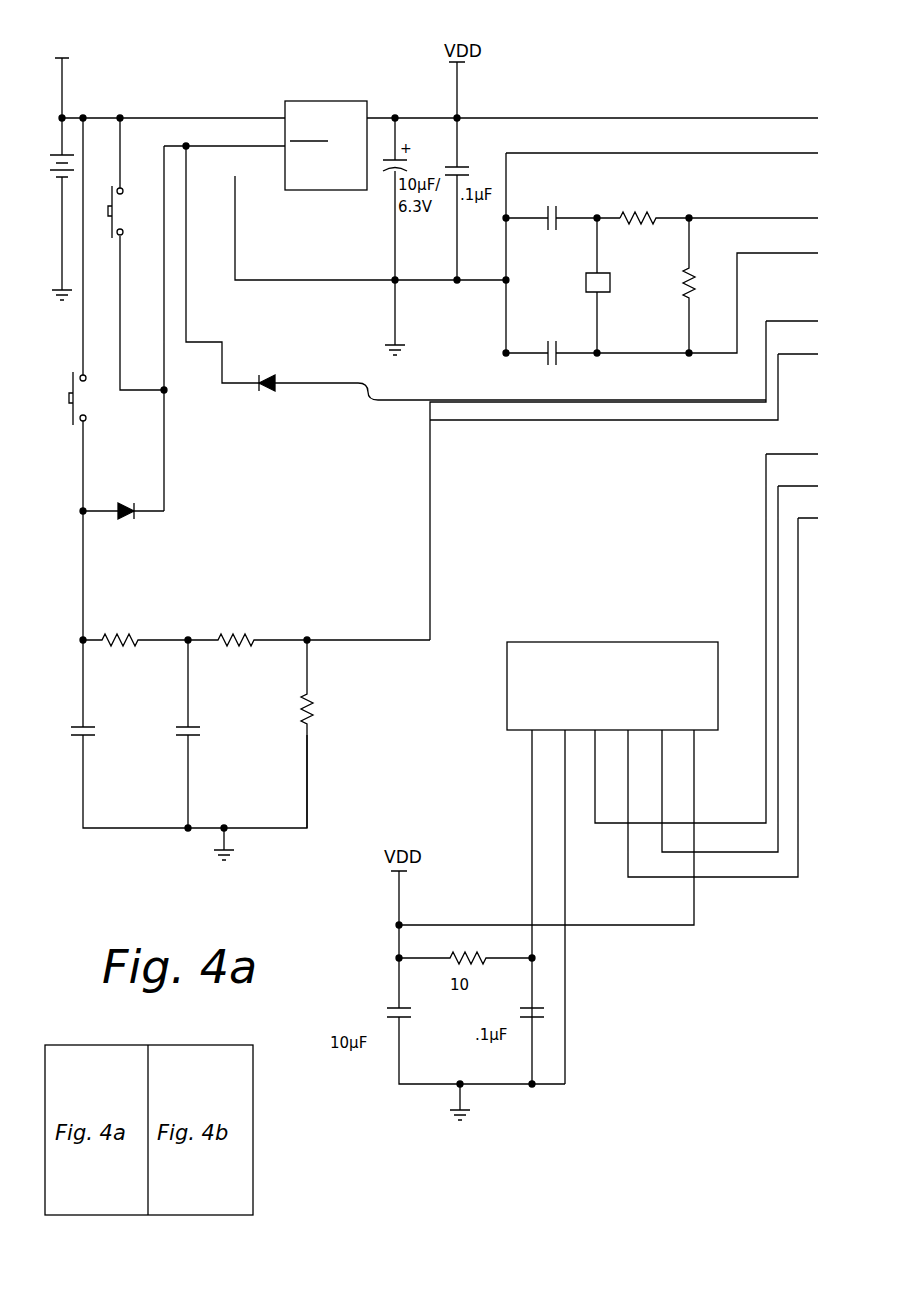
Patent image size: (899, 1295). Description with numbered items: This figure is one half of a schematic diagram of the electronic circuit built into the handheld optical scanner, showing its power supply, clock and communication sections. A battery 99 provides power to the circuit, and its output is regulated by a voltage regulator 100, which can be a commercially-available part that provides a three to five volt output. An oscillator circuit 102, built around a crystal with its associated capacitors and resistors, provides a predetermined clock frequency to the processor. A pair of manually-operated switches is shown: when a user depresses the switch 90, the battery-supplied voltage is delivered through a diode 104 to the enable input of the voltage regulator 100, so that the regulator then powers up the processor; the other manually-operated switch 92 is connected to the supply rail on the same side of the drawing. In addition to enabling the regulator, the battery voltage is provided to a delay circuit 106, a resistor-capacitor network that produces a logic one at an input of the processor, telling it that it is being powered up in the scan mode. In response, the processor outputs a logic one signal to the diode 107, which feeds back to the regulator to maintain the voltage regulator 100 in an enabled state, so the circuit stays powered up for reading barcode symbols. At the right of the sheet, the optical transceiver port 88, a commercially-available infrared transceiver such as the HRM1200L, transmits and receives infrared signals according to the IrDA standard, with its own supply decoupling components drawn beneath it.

The optical transceiver port 88 is at (498, 708).
The switch 90 is at (68, 425).
The manually-operated switch 92 is at (120, 186).
The battery 99 is at (55, 157).
The voltage regulator 100 is at (322, 100).
The oscillator circuit 102 is at (574, 206).
The diode 104 is at (127, 506).
The delay circuit 106 is at (240, 598).
The diode 107 is at (274, 393).